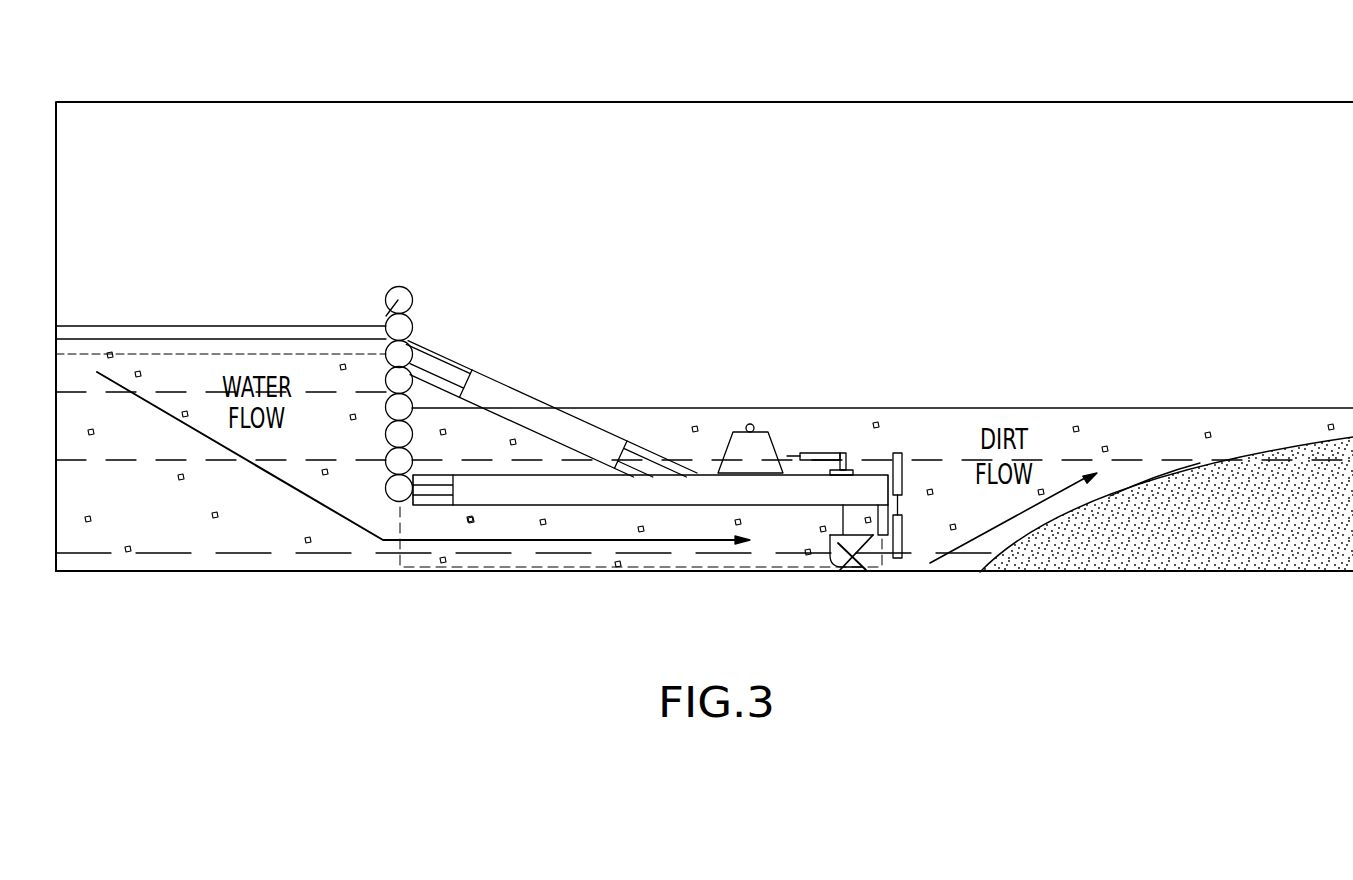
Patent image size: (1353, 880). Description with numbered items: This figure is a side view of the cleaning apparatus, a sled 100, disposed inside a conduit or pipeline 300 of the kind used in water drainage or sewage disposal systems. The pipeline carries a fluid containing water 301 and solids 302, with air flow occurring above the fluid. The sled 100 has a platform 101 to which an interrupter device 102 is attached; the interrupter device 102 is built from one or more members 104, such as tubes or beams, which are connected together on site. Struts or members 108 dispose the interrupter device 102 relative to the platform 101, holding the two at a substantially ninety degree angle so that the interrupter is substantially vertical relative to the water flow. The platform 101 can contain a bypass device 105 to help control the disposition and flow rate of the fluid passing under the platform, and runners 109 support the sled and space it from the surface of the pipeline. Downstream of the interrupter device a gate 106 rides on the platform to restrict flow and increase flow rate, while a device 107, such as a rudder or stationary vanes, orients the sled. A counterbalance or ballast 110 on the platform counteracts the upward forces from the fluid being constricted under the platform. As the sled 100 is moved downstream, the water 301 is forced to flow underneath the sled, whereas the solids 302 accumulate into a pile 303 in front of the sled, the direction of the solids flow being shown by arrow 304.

The sled 100 is at (652, 337).
The platform 101 is at (658, 490).
The interrupter device 102 is at (448, 369).
The members 104 is at (408, 302).
The bypass device 105 is at (386, 312).
The gate 106 is at (921, 434).
The orienting device 107 is at (870, 567).
The members 108 is at (533, 397).
The runners 109 is at (567, 543).
The counterbalance 110 is at (750, 438).
The pipeline 300 is at (843, 102).
The water 301 is at (112, 326).
The solids 302 is at (1270, 523).
The pile 303 is at (1177, 468).
The arrow 304 is at (1020, 517).